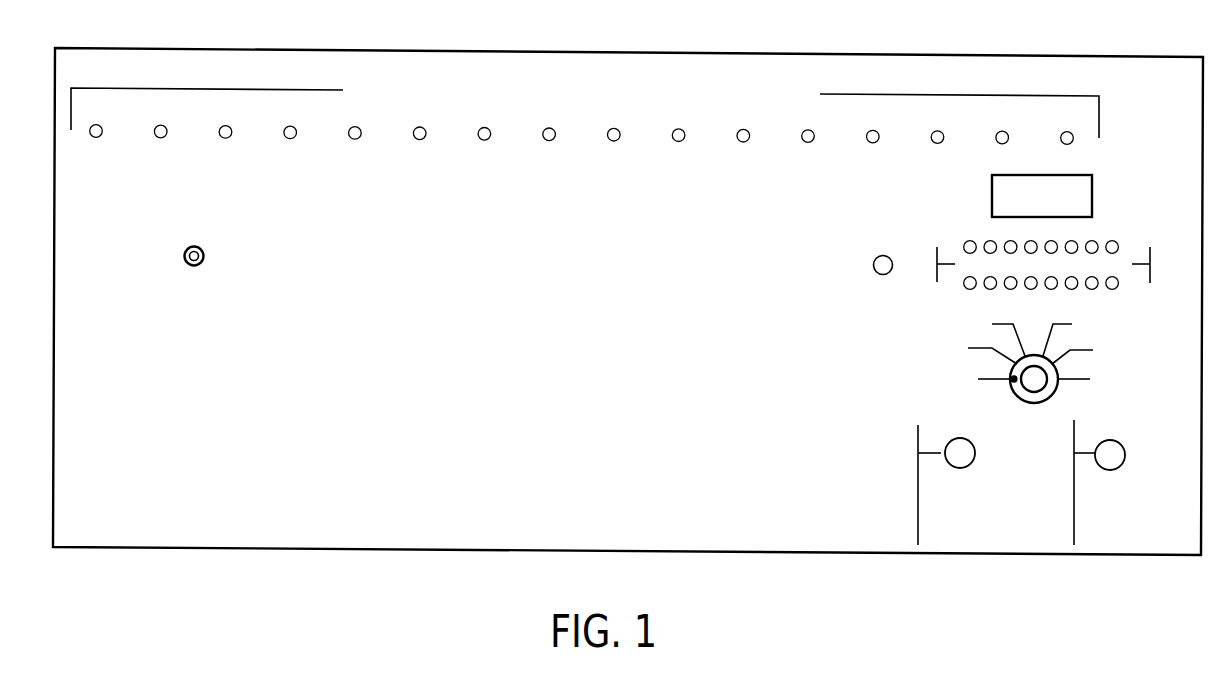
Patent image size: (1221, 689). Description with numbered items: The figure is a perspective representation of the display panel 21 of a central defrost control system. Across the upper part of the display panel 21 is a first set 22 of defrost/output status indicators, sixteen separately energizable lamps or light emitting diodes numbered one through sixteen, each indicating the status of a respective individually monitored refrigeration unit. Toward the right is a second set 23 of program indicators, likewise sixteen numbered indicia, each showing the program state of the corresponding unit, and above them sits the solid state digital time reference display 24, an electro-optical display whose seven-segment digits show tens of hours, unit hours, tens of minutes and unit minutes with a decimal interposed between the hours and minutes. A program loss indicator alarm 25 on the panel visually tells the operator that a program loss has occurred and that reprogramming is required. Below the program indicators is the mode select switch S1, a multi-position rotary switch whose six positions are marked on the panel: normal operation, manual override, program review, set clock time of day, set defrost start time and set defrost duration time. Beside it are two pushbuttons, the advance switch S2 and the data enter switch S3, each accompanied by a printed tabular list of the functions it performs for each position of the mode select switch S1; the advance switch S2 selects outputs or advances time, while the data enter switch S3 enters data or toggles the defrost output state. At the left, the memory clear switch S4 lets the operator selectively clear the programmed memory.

The display panel 21 is at (548, 52).
The first set of defrost/output status indicators 22 is at (481, 140).
The second set of program indicators 23 is at (946, 237).
The solid state digital time reference display 24 is at (1101, 186).
The program loss indicator alarm 25 is at (880, 278).
The mode select switch S1 is at (1061, 395).
The advance switch S2 is at (960, 472).
The data enter switch S3 is at (1120, 471).
The memory clear switch S4 is at (207, 250).